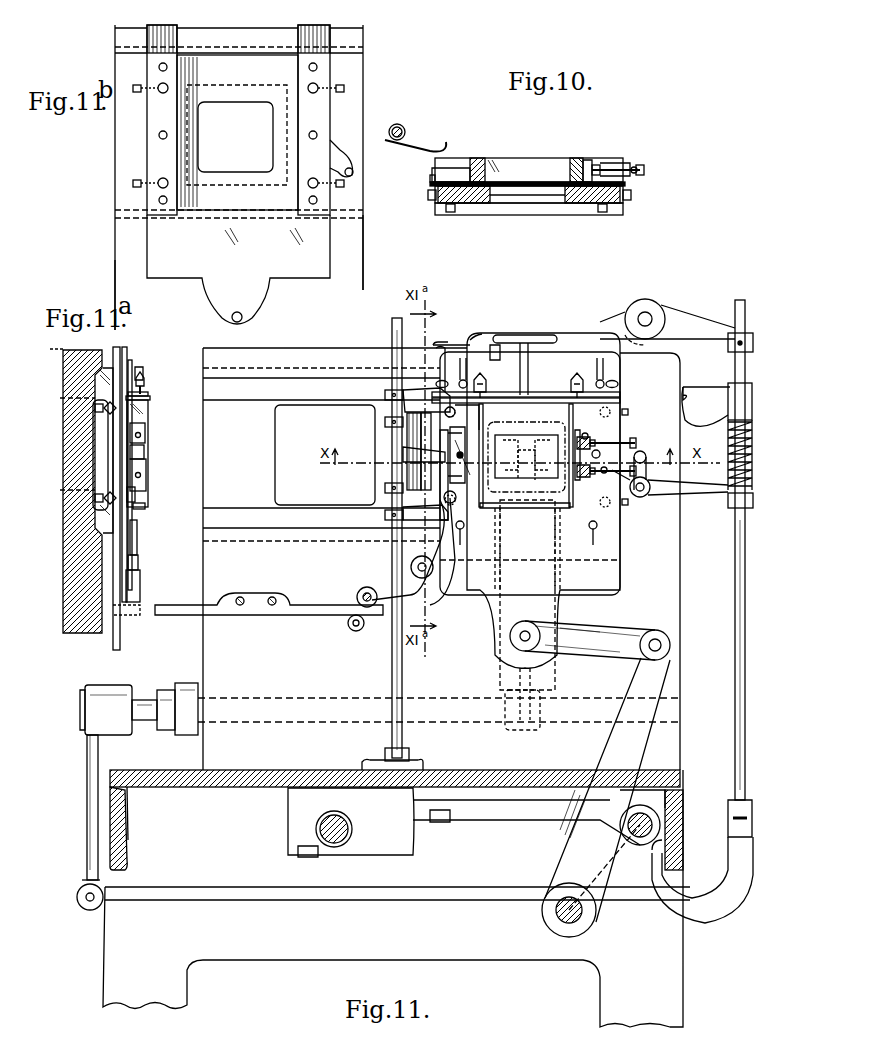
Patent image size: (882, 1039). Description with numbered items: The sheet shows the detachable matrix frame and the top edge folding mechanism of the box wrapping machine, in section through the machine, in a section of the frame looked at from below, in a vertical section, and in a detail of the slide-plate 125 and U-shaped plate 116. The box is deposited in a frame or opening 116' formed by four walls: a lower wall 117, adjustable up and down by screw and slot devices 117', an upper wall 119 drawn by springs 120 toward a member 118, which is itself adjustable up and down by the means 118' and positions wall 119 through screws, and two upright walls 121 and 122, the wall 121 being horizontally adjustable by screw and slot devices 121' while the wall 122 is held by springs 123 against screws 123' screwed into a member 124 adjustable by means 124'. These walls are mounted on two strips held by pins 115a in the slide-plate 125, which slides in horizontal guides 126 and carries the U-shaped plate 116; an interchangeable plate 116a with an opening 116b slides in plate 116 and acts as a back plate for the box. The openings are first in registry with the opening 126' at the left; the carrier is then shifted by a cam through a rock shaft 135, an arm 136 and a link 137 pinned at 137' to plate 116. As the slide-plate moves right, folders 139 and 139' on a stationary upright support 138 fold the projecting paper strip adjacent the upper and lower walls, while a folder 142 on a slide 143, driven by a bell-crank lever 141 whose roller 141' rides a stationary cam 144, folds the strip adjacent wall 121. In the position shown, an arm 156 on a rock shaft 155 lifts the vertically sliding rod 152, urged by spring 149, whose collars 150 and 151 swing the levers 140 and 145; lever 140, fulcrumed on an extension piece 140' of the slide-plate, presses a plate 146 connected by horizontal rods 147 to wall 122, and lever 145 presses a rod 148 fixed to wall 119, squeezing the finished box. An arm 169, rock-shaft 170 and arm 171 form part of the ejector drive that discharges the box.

In FIG. 10, the pins 115a is at (622, 222).
In FIG. 11a, the pins 115a is at (97, 498).
In FIG. 11, the pins 115a is at (628, 411).
In FIG. 11b, the U-shaped plate 116 is at (238, 269).
In FIG. 10, the U-shaped plate 116 is at (536, 200).
In FIG. 11a, the U-shaped plate 116 is at (78, 498).
In FIG. 11, the U-shaped plate 116 is at (573, 551).
In FIG. 10, the frame or opening 116' is at (529, 157).
In FIG. 10, the interchangeable plate 116a is at (495, 196).
In FIG. 11, the interchangeable plate 116a is at (487, 338).
In FIG. 10, the opening 116b is at (533, 200).
In FIG. 11, the opening 116b is at (530, 435).
In FIG. 11a, the lower wall 117 is at (158, 509).
In FIG. 11, the lower wall 117 is at (525, 546).
In FIG. 11a, the screw and slot devices 117' is at (154, 537).
In FIG. 11, the screw and slot devices 117' is at (526, 541).
In FIG. 11a, the member 118 is at (153, 386).
In FIG. 11, the member 118 is at (526, 387).
In FIG. 11a, the adjusting means 118' is at (154, 359).
In FIG. 11, the adjusting means 118' is at (540, 364).
In FIG. 10, the upper wall 119 is at (614, 163).
In FIG. 11a, the upper wall 119 is at (148, 398).
In FIG. 11, the upper wall 119 is at (560, 389).
In FIG. 11a, the springs 120 is at (143, 385).
In FIG. 11, the springs 120 is at (480, 380).
In FIG. 10, the upright wall 121 is at (505, 153).
In FIG. 11a, the upright wall 121 is at (155, 453).
In FIG. 11, the upright wall 121 is at (471, 455).
In FIG. 11a, the screw and slot devices 121' is at (158, 433).
In FIG. 10, the upright wall 122 is at (572, 162).
In FIG. 11, the upright wall 122 is at (573, 422).
In FIG. 10, the springs 123 is at (615, 155).
In FIG. 11, the springs 123 is at (605, 467).
In FIG. 11, the screws 123' is at (601, 430).
In FIG. 10, the member 124 is at (577, 150).
In FIG. 11, the member 124 is at (601, 444).
In FIG. 11, the adjusting means 124' is at (628, 447).
In FIG. 11b, the slide-plate 125 is at (235, 75).
In FIG. 10, the slide-plate 125 is at (475, 205).
In FIG. 11a, the slide-plate 125 is at (92, 452).
In FIG. 11b, the horizontal guides 126 is at (238, 194).
In FIG. 11a, the horizontal guides 126 is at (69, 491).
In FIG. 11, the horizontal guides 126 is at (335, 559).
In FIG. 11, the opening 126' is at (325, 455).
In FIG. 11, the rock shaft 135 is at (555, 915).
In FIG. 11, the arm 136 is at (610, 742).
In FIG. 11, the link 137 is at (597, 648).
In FIG. 11, the pin 137' is at (504, 636).
In FIG. 10, the stationary upright support 138 is at (393, 140).
In FIG. 11, the stationary upright support 138 is at (392, 655).
In FIG. 11, the folder 139 is at (402, 387).
In FIG. 10, the middle folder 139' is at (415, 135).
In FIG. 11, the middle folder 139' is at (394, 475).
In FIG. 11, the lever 140 is at (700, 449).
In FIG. 11b, the extension piece 140' is at (367, 138).
In FIG. 11, the extension piece 140' is at (632, 496).
In FIG. 11a, the bell-crank lever 141 is at (155, 493).
In FIG. 11, the bell-crank lever 141 is at (393, 548).
In FIG. 11a, the roller 141' is at (144, 585).
In FIG. 11, the roller 141' is at (347, 605).
In FIG. 10, the folder 142 is at (477, 158).
In FIG. 11a, the folder 142 is at (148, 470).
In FIG. 11, the folder 142 is at (465, 485).
In FIG. 10, the slide 143 is at (437, 170).
In FIG. 11a, the slide 143 is at (145, 452).
In FIG. 11, the slide 143 is at (417, 451).
In FIG. 11, the stationary cam 144 is at (215, 600).
In FIG. 11, the lever 145 is at (693, 330).
In FIG. 10, the plate 146 is at (640, 165).
In FIG. 11, the plate 146 is at (642, 450).
In FIG. 10, the horizontal rods 147 is at (632, 165).
In FIG. 11, the horizontal rods 147 is at (645, 492).
In FIG. 11, the rod 148 is at (520, 335).
In FIG. 11, the spring 149 is at (750, 455).
In FIG. 11, the collar 150 is at (754, 503).
In FIG. 11, the collar 151 is at (754, 350).
In FIG. 11, the vertically sliding rod 152 is at (745, 600).
In FIG. 11, the rock shaft 155 is at (660, 825).
In FIG. 11, the arm 156 is at (718, 895).
In FIG. 11, the arm 169 is at (87, 775).
In FIG. 11, the rock-shaft 170 is at (440, 733).
In FIG. 11, the arm 171 is at (510, 678).